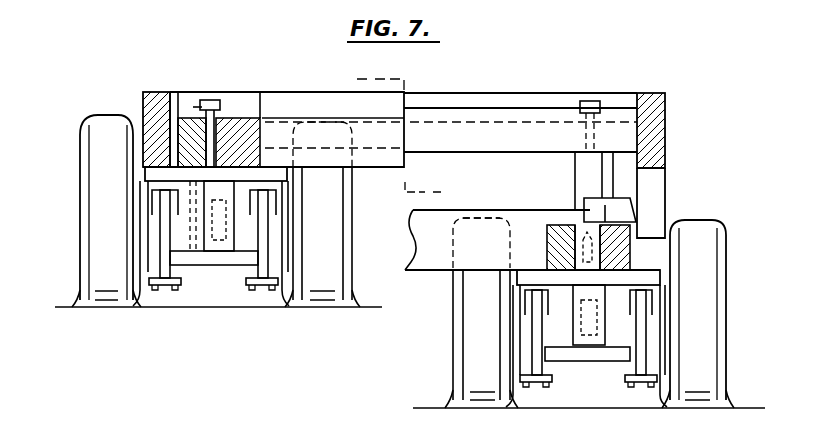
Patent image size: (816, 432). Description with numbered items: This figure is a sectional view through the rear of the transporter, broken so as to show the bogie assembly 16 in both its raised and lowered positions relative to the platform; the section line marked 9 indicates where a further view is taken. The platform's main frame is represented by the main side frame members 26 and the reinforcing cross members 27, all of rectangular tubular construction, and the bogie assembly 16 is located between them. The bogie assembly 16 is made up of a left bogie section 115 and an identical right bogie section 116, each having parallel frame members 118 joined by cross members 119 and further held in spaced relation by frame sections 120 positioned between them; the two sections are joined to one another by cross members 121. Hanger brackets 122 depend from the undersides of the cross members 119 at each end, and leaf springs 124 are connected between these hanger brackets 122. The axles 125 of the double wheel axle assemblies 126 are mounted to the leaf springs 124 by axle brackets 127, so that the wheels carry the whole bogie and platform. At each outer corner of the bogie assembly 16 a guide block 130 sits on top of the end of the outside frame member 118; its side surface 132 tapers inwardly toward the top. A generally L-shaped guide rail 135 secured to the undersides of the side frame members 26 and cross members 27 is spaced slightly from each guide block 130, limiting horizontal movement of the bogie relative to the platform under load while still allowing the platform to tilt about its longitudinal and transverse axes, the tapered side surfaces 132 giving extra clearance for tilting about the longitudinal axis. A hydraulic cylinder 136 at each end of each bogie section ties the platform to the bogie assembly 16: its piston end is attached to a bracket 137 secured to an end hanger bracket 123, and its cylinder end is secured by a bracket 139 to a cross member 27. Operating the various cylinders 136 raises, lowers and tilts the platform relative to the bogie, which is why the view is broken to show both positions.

The section line 9- 9 is at (133, 78).
The bogie assembly 16 is at (396, 345).
The main side frame member 26 is at (148, 90).
The reinforcing cross member 27 is at (463, 112).
The left bogie section 115 is at (586, 378).
The right bogie section 116 is at (194, 286).
The parallel frame member 118 is at (178, 140).
The cross member 119 is at (160, 176).
The frame section 120 is at (233, 125).
The cross member 121 is at (452, 210).
The hanger bracket 122 is at (153, 197).
The end hanger bracket 123 is at (228, 242).
The leaf spring 124 is at (162, 252).
The axle 125 is at (240, 264).
The double wheel axle assembly 126 is at (100, 238).
The axle bracket 127 is at (160, 284).
The guide block 130 is at (191, 97).
The side surface 132 is at (176, 98).
The guide rail 135 is at (667, 176).
The hydraulic cylinder 136 is at (574, 163).
The bracket 137 is at (190, 310).
The bracket 139 is at (205, 108).